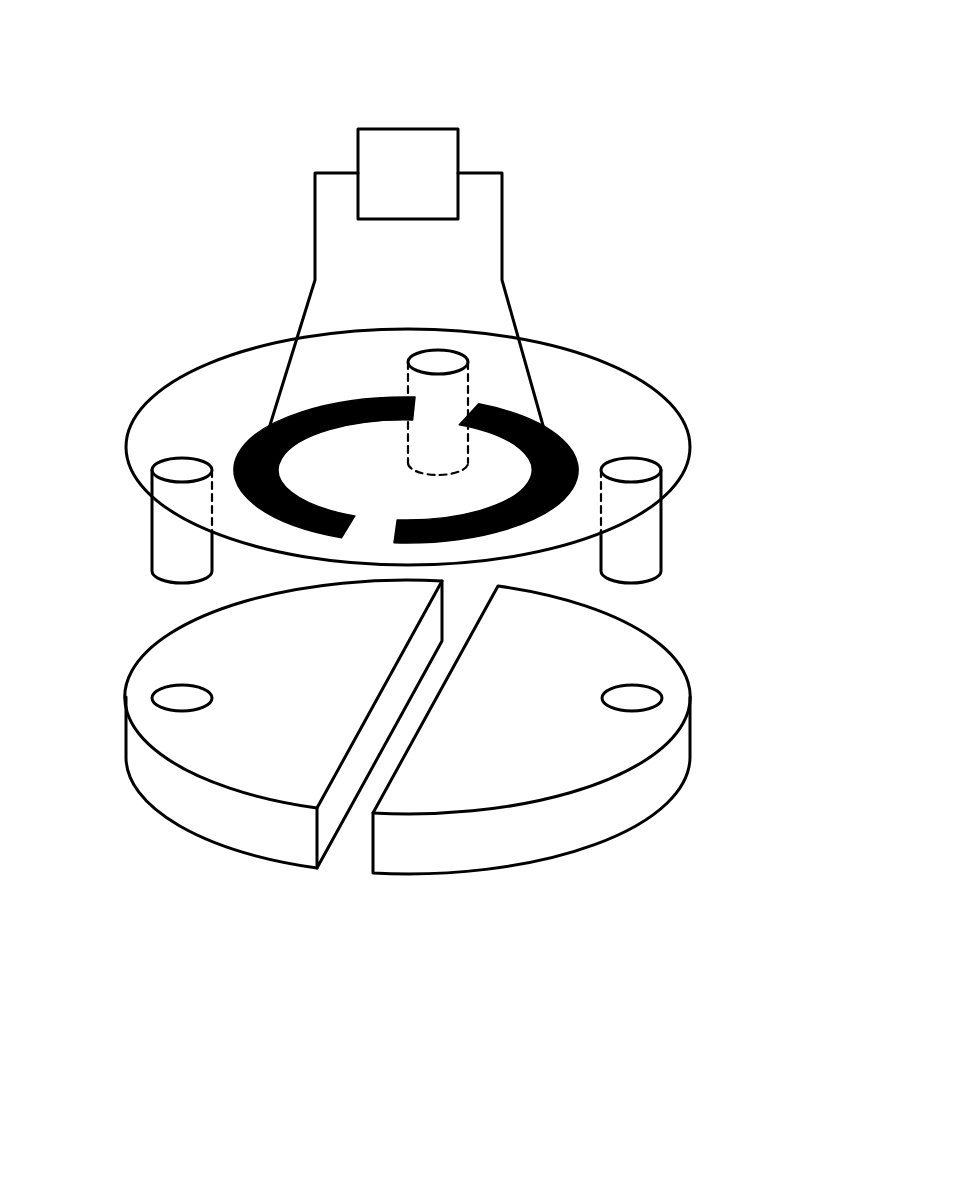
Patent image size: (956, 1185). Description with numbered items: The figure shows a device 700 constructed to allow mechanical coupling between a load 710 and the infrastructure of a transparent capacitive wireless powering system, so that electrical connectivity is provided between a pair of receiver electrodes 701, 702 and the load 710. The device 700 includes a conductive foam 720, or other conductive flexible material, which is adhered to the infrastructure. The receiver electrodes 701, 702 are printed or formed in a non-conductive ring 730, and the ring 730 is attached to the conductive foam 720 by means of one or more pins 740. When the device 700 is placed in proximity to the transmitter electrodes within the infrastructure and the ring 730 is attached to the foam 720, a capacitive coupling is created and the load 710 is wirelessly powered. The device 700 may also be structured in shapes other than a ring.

The device 700 is at (667, 184).
The load 710 is at (407, 128).
The conductive foam 720 is at (692, 742).
The non-conductive ring 730 is at (690, 443).
The pins 740 is at (439, 361).
The receiver electrode 701 is at (565, 440).
The receiver electrode 702 is at (248, 438).